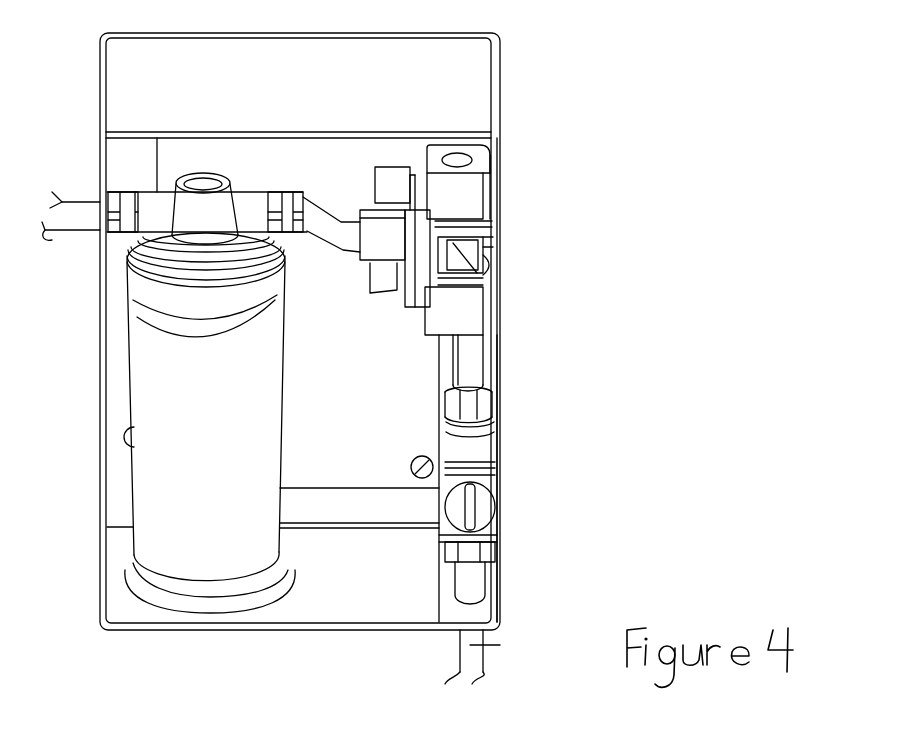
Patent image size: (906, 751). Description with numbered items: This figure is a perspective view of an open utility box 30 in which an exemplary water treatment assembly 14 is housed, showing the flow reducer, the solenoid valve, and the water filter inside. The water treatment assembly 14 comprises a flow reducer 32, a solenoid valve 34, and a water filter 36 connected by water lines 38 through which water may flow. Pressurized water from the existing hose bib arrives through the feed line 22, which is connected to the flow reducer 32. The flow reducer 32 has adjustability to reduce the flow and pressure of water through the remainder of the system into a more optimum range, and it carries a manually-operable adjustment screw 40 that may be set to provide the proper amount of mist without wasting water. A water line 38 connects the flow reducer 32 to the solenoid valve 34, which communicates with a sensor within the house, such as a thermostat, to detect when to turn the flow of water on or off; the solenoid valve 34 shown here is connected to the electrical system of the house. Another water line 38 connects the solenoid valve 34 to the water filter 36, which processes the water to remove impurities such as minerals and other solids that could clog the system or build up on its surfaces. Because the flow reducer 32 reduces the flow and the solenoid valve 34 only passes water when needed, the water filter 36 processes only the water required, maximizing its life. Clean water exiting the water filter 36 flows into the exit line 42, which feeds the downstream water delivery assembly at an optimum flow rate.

The water treatment assembly 14 is at (557, 312).
The feed line 22 is at (462, 588).
The utility box 30 is at (457, 90).
The flow reducer 32 is at (482, 445).
The solenoid valve 34 is at (468, 231).
The water filter 36 is at (258, 410).
The water lines 38 is at (327, 208).
The adjustment screw 40 is at (487, 507).
The exit line 42 is at (75, 213).